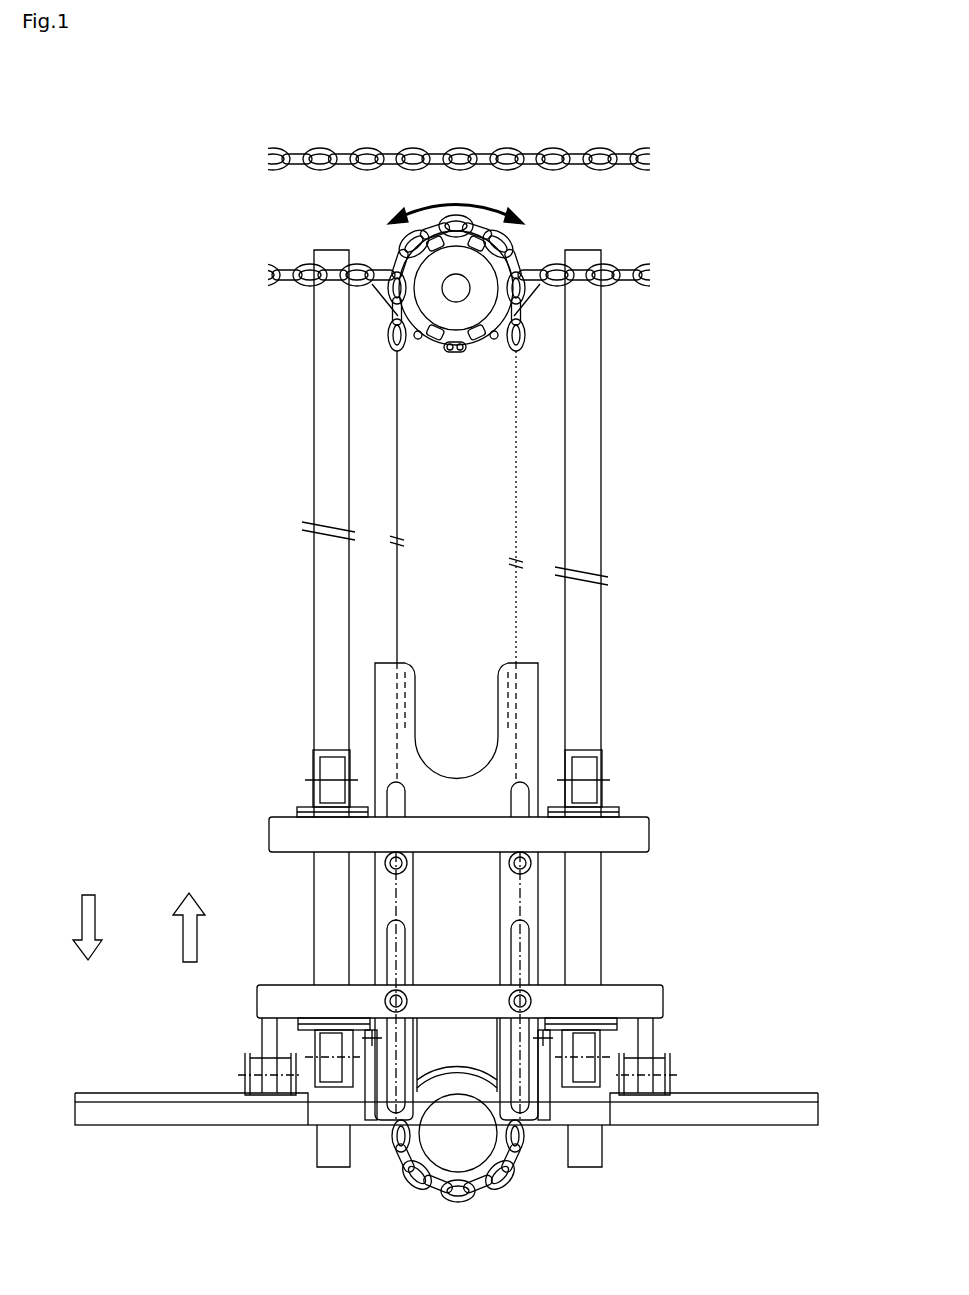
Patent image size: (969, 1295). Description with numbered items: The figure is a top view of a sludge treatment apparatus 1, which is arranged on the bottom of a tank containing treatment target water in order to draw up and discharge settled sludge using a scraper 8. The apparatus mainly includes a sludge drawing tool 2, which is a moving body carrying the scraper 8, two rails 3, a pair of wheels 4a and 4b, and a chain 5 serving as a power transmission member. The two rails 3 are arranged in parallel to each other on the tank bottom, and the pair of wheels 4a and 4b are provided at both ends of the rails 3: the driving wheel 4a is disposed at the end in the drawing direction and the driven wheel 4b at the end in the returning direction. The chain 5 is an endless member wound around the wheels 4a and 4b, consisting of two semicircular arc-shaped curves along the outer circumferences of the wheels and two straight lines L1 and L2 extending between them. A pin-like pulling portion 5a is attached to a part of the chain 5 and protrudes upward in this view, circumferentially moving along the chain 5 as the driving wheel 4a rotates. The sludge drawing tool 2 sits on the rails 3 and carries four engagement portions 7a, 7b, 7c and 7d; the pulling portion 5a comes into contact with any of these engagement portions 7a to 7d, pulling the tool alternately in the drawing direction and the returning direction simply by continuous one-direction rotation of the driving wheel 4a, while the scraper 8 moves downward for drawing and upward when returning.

The sludge treatment apparatus 1 is at (728, 141).
The sludge drawing tool 2 is at (612, 935).
The rails 3 is at (330, 468).
The driving wheel 4a is at (455, 353).
The driven wheel 4b is at (466, 1163).
The chain 5 is at (442, 1195).
The pulling portion 5a is at (395, 720).
The engagement portion 7a is at (412, 672).
The engagement portion 7b is at (527, 1107).
The engagement portion 7c is at (392, 1107).
The engagement portion 7d is at (500, 670).
The scraper 8 is at (757, 1112).
The straight line L1 is at (398, 522).
The straight line L2 is at (515, 617).